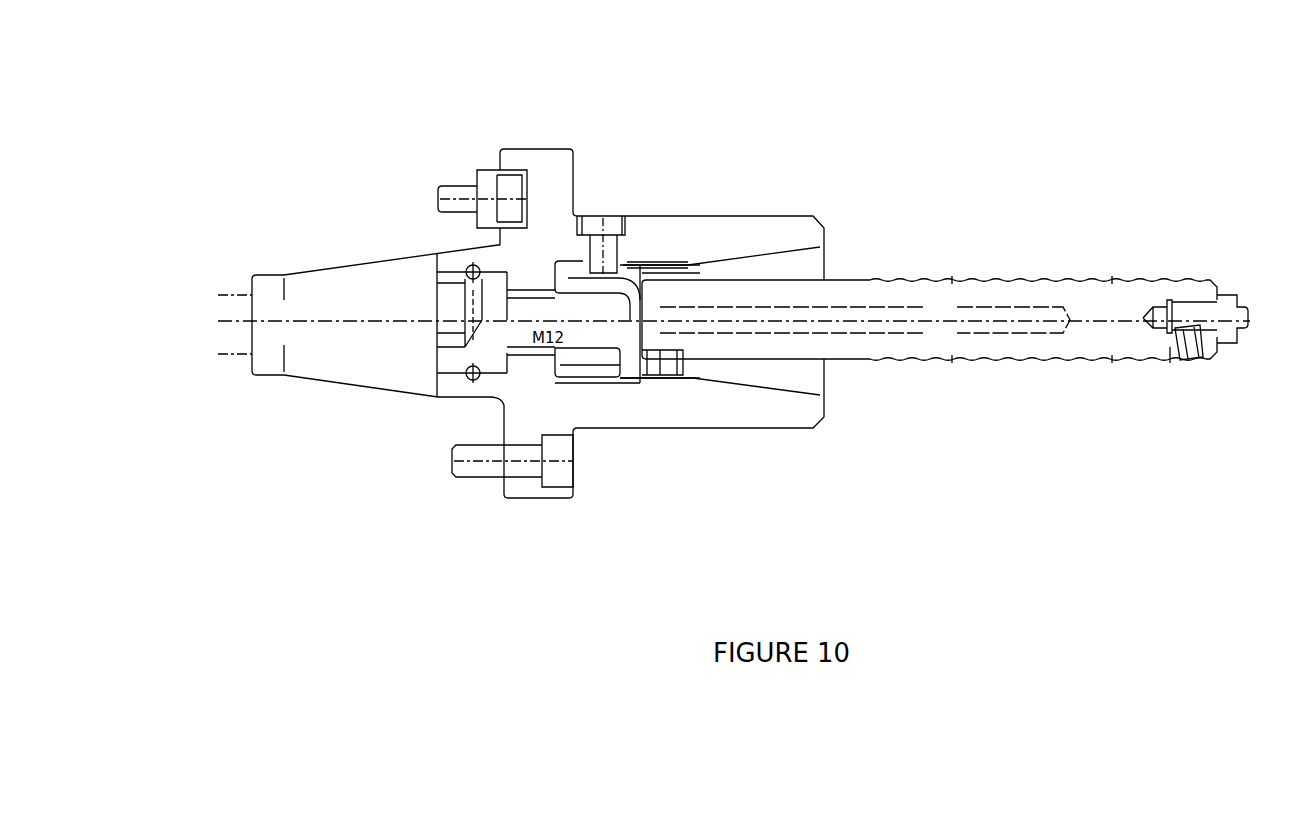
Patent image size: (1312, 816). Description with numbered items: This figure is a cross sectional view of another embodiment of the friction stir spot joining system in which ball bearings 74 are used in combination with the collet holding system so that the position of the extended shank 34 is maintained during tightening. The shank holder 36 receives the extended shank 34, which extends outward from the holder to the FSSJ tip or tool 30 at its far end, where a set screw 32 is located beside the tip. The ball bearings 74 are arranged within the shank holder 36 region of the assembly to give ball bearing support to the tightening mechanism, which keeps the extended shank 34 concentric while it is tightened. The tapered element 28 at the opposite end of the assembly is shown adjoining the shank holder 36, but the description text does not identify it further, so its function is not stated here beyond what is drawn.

The taper shank 28 is at (425, 425).
The flange 74 is at (467, 268).
The housing 36 is at (823, 127).
The shaft 34 is at (1212, 442).
The end pin 30 is at (1228, 300).
The set screw 32 is at (1190, 348).